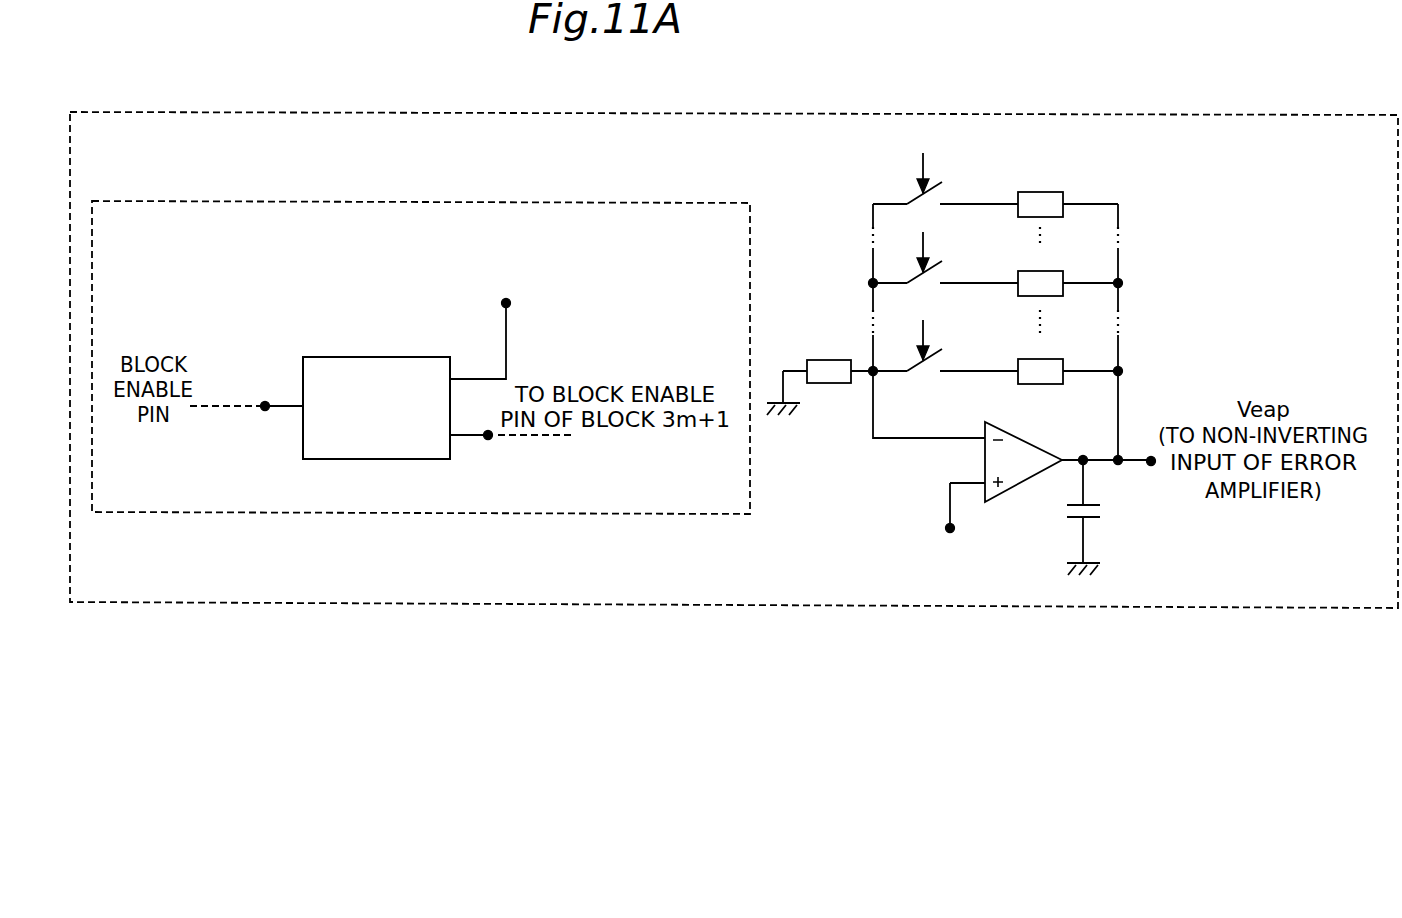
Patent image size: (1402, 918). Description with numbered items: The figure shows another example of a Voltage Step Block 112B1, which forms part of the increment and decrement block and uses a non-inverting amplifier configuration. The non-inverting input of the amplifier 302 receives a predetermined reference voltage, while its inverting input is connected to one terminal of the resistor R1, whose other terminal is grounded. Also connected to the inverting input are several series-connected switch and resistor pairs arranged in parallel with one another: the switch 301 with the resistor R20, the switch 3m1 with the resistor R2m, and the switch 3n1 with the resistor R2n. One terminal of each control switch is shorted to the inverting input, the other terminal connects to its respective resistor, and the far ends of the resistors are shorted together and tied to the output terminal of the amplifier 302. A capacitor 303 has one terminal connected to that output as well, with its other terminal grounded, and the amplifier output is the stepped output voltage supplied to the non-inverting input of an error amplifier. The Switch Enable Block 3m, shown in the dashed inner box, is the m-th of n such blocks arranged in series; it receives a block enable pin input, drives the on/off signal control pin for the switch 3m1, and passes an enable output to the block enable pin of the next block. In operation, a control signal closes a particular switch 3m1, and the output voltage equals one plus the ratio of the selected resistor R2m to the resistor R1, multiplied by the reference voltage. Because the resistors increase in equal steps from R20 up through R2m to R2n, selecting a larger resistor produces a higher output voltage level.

The Voltage Step Block 112B1 is at (1264, 104).
The Switch Enable Block 3m is at (378, 357).
The switch 3m1 is at (510, 347).
The switch 3n1 is at (927, 162).
The switch 301 is at (927, 330).
The amplifier 302 is at (1030, 440).
The capacitor 303 is at (1097, 522).
The resistor R1 is at (820, 373).
The resistor R2n is at (1068, 192).
The resistor R2m is at (1068, 271).
The resistor R20 is at (1068, 359).